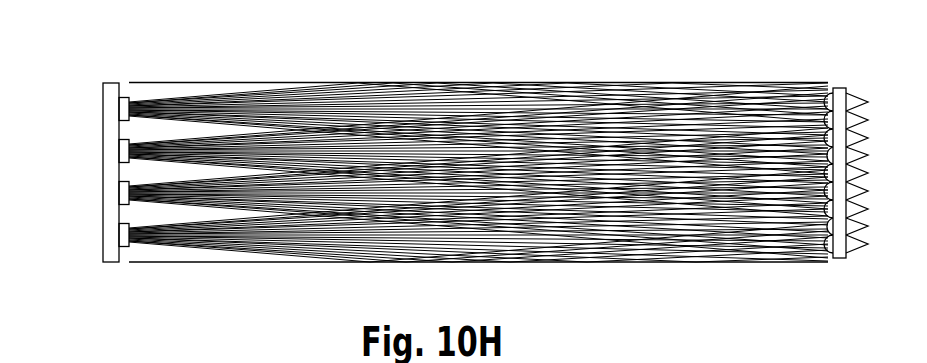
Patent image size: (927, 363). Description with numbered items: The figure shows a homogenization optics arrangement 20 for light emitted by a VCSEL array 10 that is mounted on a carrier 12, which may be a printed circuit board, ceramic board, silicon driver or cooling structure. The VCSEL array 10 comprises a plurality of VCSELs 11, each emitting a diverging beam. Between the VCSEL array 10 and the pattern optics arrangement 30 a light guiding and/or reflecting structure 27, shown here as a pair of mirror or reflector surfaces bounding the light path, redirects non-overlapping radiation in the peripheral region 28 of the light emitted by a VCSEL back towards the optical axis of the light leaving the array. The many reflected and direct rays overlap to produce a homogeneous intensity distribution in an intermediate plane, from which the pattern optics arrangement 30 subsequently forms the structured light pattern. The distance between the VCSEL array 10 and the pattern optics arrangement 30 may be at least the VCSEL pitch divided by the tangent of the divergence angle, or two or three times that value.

The VCSEL array 10 is at (74, 172).
The VCSELs 11 is at (117, 101).
The carrier 12 is at (103, 195).
The homogenization optics arrangement 20 is at (478, 186).
The light guiding and/or reflecting structure 27 is at (252, 74).
The peripheral region 28 is at (213, 240).
The pattern optics arrangement 30 is at (837, 255).